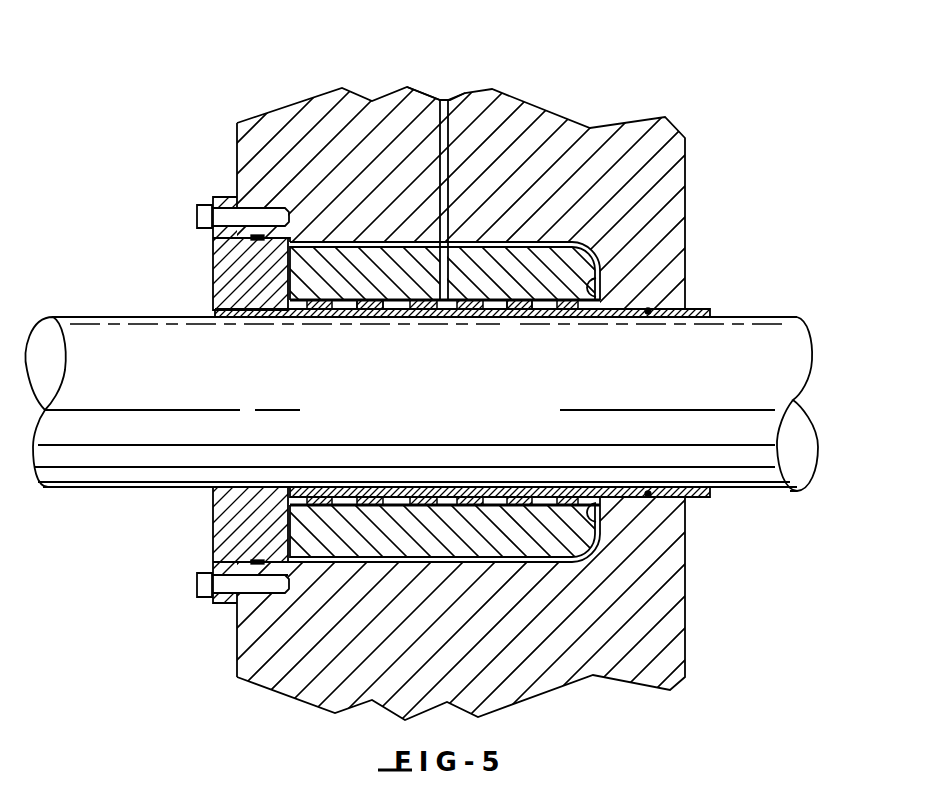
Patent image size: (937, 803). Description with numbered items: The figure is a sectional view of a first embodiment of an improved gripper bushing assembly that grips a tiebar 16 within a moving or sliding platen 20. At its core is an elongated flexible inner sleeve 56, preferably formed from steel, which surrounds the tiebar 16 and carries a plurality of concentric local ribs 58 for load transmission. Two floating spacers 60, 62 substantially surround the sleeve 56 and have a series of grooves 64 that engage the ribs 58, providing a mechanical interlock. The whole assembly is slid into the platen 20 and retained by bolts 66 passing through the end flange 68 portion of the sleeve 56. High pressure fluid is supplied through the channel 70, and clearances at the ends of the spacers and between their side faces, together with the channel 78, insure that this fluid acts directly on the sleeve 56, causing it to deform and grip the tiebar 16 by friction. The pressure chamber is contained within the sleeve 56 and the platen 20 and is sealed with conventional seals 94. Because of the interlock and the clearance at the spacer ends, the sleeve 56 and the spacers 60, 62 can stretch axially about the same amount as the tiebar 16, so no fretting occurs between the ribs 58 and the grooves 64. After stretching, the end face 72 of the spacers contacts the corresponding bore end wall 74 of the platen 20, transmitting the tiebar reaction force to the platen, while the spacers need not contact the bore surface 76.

The tiebar 16 is at (416, 421).
The moving or sliding platen 20 is at (683, 138).
The elongated flexible inner sleeve 56 is at (700, 312).
The concentric local ribs 58 is at (517, 306).
The spacer 60 is at (555, 243).
The spacer 62 is at (578, 530).
The grooves 64 is at (378, 300).
The bolts 66 is at (205, 207).
The end flange 68 is at (213, 250).
The channel 70 is at (450, 142).
The end face 72 is at (600, 300).
The bore end wall 74 is at (600, 290).
The bore surface 76 is at (548, 235).
The channel 78 is at (436, 268).
The seals 94 is at (213, 262).